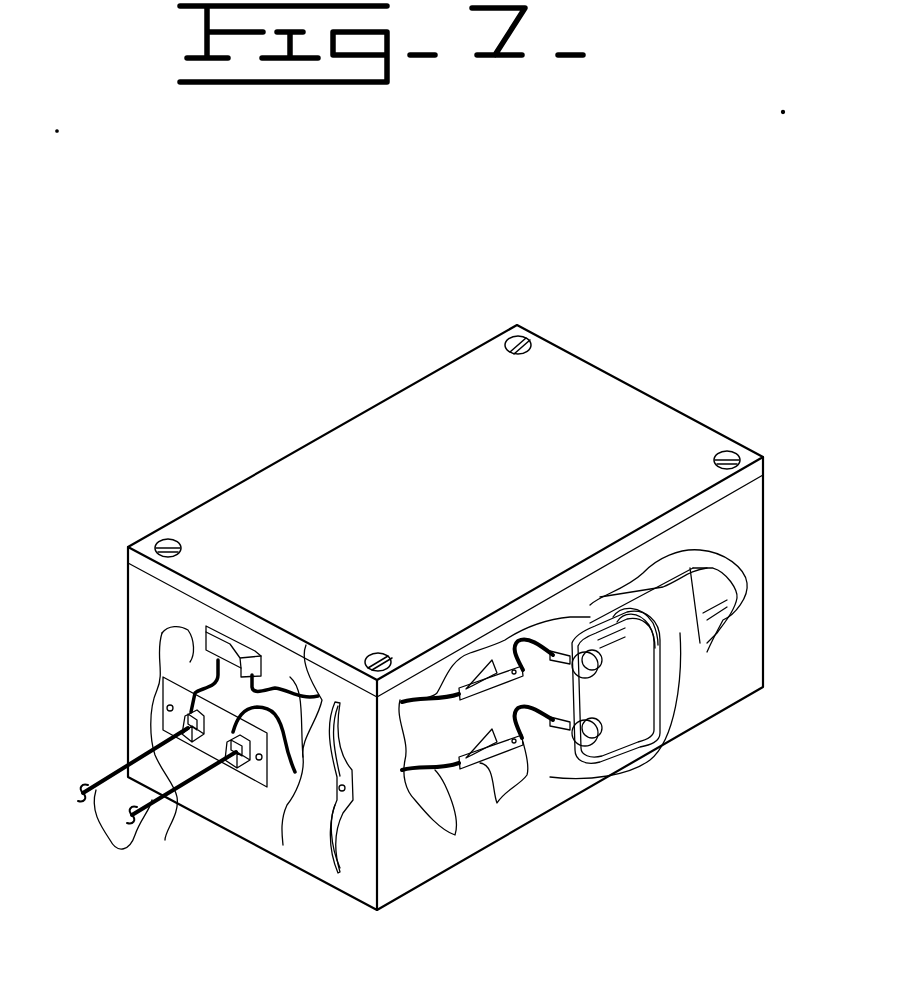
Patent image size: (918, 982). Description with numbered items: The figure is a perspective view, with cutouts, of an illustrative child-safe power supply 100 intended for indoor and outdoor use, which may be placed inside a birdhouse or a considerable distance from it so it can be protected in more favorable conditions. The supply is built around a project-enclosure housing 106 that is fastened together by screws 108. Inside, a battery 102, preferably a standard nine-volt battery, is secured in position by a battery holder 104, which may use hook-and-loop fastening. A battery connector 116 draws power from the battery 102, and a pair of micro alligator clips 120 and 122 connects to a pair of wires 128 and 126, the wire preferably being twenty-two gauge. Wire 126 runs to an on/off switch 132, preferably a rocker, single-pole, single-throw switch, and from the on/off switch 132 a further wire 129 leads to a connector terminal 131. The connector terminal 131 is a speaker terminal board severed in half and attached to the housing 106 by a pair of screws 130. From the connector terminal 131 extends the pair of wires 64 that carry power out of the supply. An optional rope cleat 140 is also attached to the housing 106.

The power supply 100 is at (276, 306).
The battery 102 is at (712, 585).
The battery holder 104 is at (675, 653).
The housing 106 is at (540, 463).
The screws 108 is at (531, 354).
The battery connector 116 is at (590, 695).
The micro alligator clip 120 is at (527, 783).
The micro alligator clip 122 is at (481, 671).
The wire 126 is at (306, 645).
The wire 128 is at (285, 800).
The wire 129 is at (213, 665).
The screws 130 is at (165, 715).
The connector terminal 131 is at (168, 690).
The on/off switch 132 is at (236, 627).
The rope cleat 140 is at (337, 872).
The pair of wires 64 is at (125, 848).